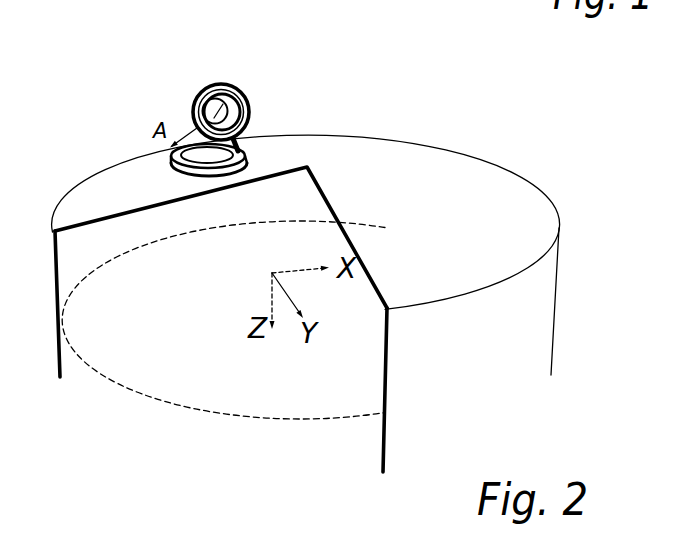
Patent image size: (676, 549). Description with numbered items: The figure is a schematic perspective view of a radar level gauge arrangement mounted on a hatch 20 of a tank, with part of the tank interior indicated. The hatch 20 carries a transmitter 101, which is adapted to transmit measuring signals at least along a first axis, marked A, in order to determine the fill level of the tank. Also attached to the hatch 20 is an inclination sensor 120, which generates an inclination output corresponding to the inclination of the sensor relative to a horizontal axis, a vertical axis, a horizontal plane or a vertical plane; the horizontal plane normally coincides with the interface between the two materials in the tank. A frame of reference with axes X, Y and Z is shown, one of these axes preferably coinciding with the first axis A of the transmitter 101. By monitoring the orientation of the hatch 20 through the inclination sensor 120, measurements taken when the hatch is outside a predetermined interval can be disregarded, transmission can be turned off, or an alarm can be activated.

The hatch 20 is at (243, 88).
The transmitter 101 is at (200, 93).
The inclination sensor 120 is at (248, 116).